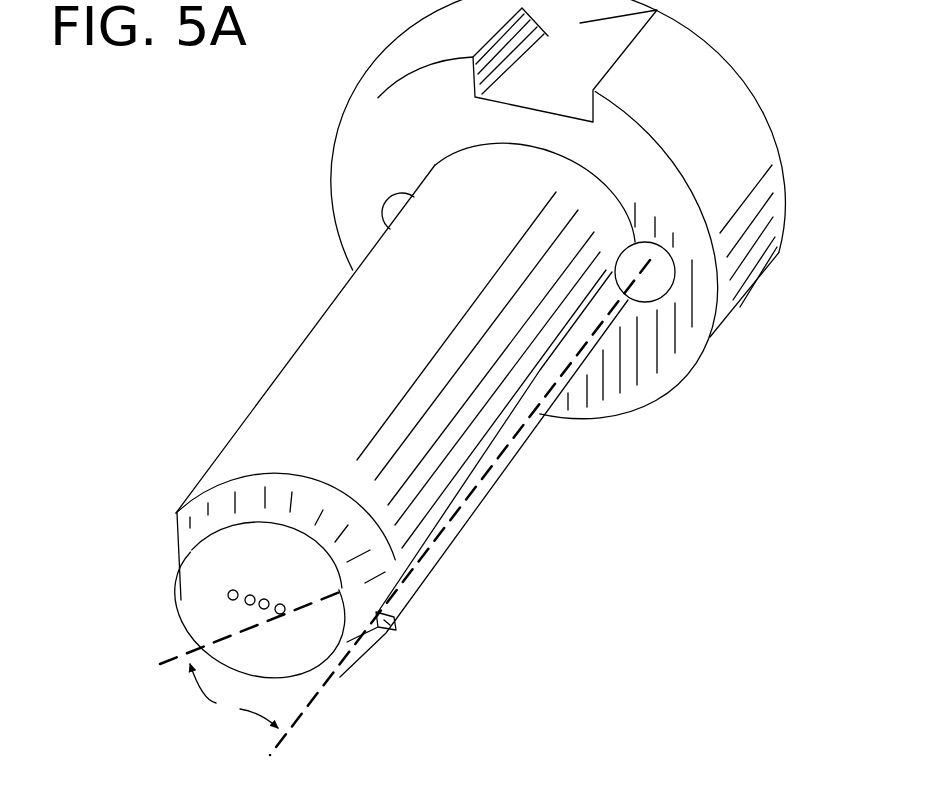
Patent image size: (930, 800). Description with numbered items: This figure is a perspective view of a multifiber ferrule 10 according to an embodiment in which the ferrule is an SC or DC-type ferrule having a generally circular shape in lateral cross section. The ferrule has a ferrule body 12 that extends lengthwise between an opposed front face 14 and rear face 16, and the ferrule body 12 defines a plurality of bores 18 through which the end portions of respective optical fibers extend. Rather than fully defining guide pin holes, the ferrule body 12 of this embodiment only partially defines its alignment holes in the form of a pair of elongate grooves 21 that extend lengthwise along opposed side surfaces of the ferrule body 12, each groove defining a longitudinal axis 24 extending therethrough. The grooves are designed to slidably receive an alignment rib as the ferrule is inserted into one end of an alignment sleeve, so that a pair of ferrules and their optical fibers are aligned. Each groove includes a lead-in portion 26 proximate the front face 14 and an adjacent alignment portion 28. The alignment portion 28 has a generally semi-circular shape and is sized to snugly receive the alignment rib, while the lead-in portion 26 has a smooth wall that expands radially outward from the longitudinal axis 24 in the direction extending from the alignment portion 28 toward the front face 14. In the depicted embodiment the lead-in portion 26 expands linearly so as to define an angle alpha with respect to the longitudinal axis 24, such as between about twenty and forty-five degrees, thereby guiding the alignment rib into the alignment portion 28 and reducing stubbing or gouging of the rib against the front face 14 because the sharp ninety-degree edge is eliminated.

The multifiber ferrule 10 is at (205, 306).
The ferrule body 12 is at (265, 440).
The front face 14 is at (217, 565).
The rear face 16 is at (712, 40).
The bores 18 is at (230, 598).
The elongate grooves 21 is at (442, 558).
The longitudinal axis 24 is at (517, 428).
The lead-in portion 26 is at (390, 630).
The alignment portion 28 is at (472, 498).